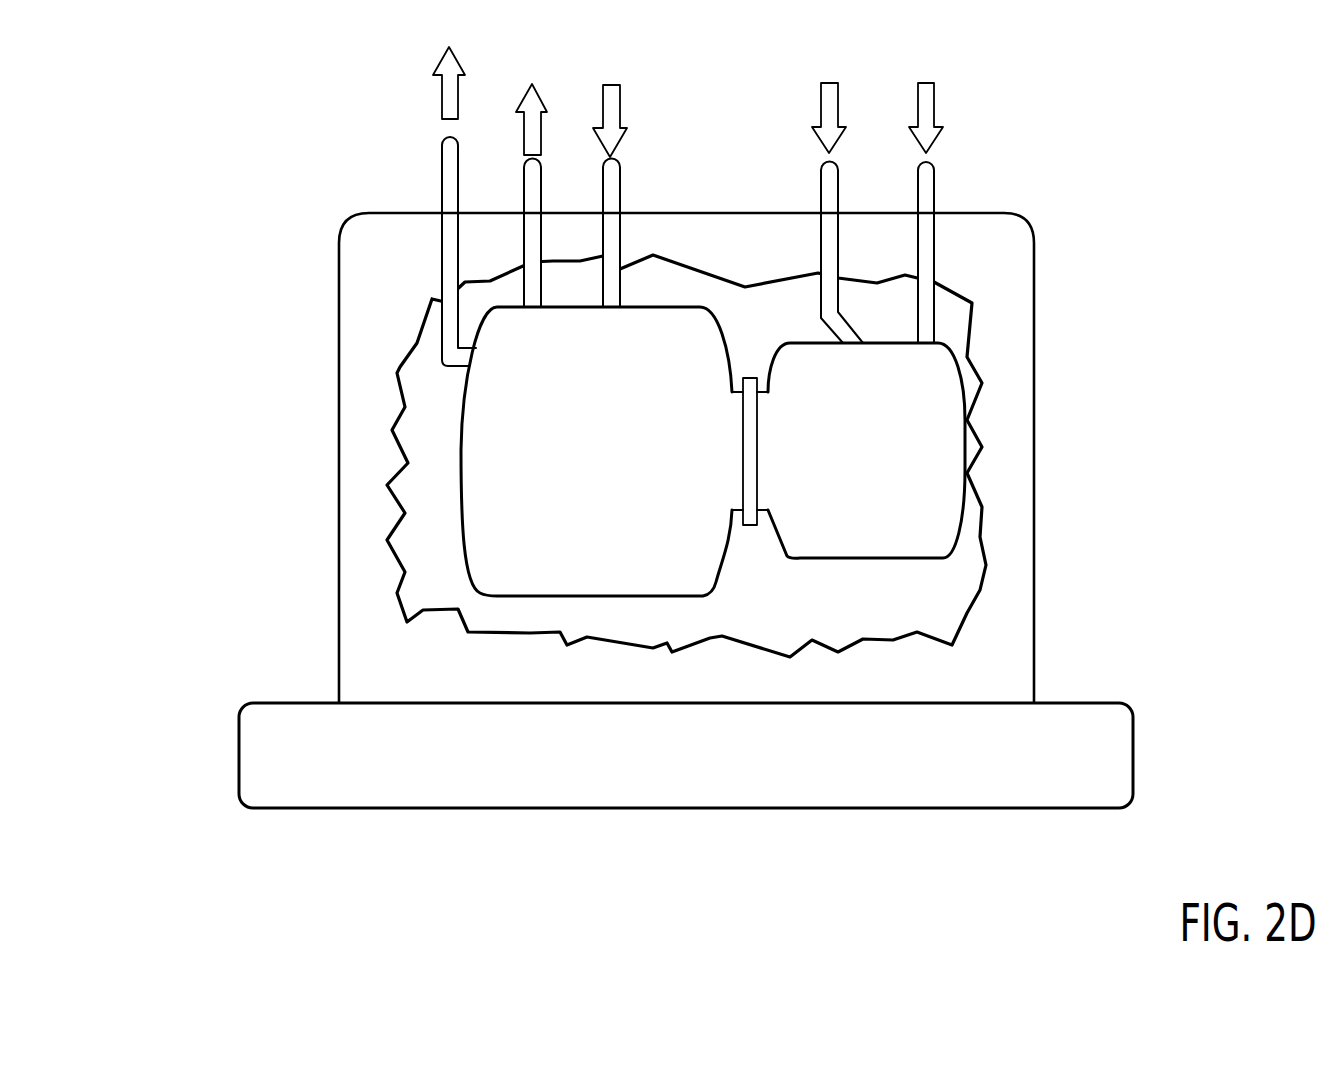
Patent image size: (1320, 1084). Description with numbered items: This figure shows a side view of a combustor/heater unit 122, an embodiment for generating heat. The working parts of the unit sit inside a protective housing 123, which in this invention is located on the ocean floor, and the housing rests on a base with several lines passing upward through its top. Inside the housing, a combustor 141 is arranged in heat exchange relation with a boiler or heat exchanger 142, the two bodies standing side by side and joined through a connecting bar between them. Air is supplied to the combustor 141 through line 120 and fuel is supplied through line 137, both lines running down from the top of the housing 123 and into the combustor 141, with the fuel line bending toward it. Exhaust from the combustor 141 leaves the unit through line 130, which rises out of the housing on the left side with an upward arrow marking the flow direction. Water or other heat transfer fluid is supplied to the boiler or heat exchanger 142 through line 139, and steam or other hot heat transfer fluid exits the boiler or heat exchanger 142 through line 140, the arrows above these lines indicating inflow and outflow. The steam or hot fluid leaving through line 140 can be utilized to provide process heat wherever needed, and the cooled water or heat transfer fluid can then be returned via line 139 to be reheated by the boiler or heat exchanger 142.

The air line 120 is at (925, 176).
The combustor/heater unit 122 is at (175, 174).
The protective housing 123 is at (1030, 287).
The exhaust line 130 is at (444, 141).
The fuel line 137 is at (827, 176).
The water supply line 139 is at (615, 172).
The steam outlet line 140 is at (527, 178).
The combustor 141 is at (847, 465).
The boiler or heat exchanger 142 is at (580, 465).